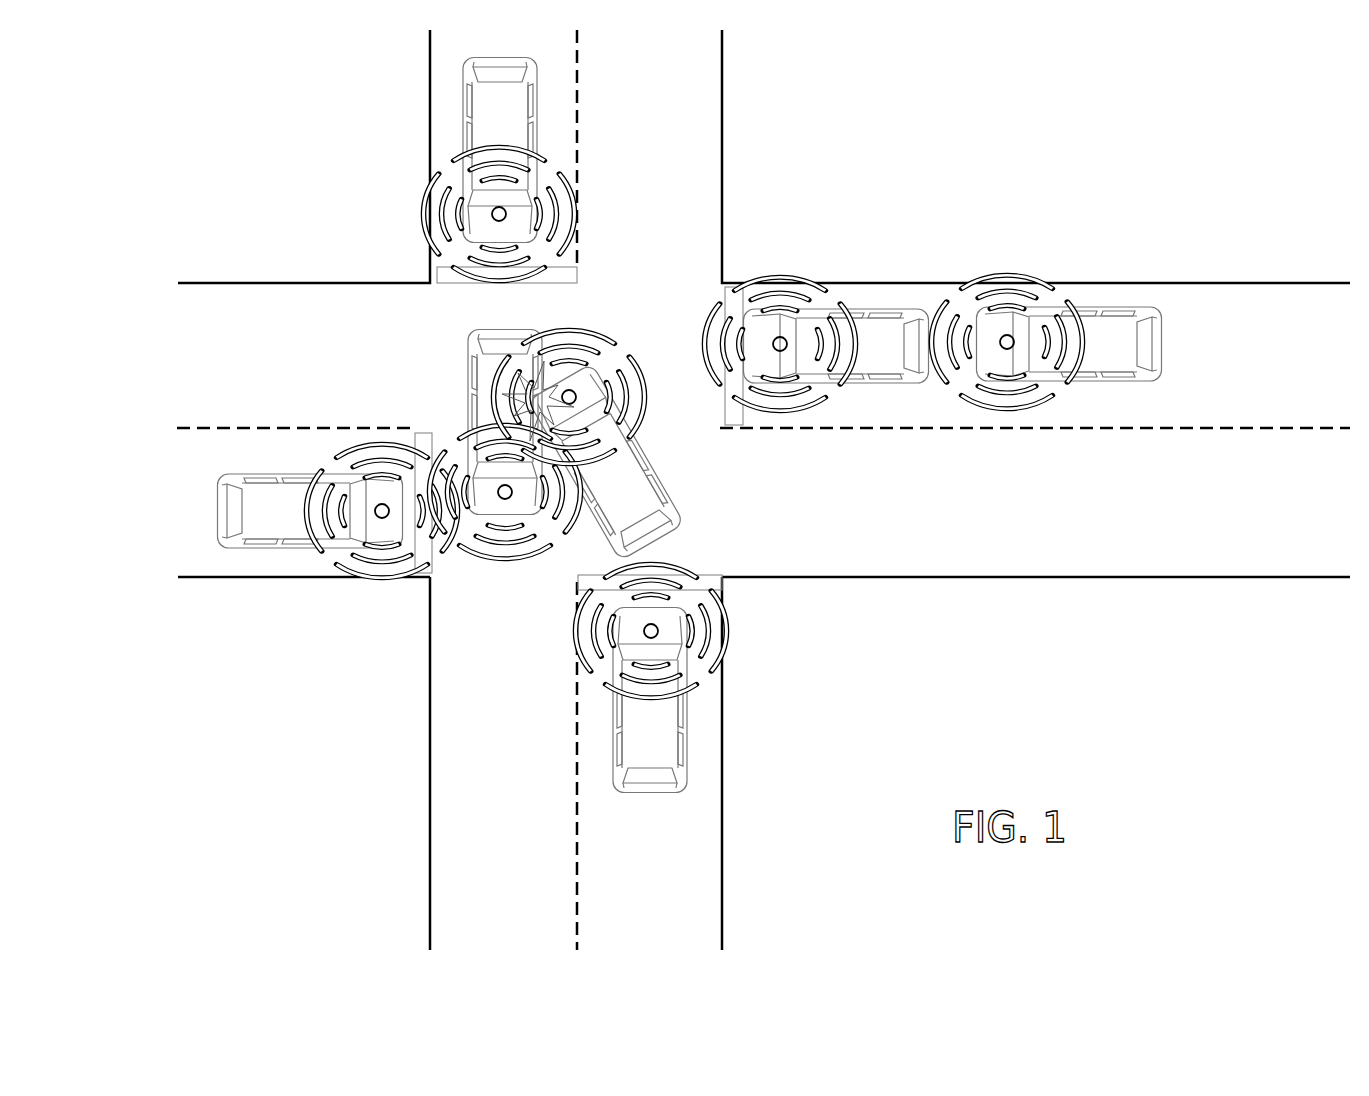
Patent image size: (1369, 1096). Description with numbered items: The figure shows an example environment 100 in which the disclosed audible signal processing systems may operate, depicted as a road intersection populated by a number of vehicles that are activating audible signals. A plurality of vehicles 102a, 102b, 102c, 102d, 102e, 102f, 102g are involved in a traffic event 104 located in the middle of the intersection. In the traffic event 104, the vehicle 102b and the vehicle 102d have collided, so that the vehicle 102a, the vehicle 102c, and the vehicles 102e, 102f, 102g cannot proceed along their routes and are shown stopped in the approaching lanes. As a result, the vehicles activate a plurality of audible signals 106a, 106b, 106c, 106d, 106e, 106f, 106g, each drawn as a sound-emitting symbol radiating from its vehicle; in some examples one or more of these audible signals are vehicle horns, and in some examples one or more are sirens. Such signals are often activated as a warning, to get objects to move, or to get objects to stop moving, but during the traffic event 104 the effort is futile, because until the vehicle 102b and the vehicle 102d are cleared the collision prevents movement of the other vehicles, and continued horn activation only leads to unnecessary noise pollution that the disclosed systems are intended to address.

The environment 100 is at (1125, 78).
The vehicle 102a is at (240, 470).
The vehicle 102b is at (475, 355).
The vehicle 102c is at (518, 123).
The vehicle 102d is at (665, 508).
The vehicle 102e is at (678, 783).
The vehicle 102f is at (883, 310).
The vehicle 102g is at (1152, 310).
The traffic event 104 is at (548, 380).
The audible signal 106a is at (381, 514).
The audible signal 106b is at (503, 488).
The audible signal 106c is at (500, 210).
The audible signal 106d is at (572, 396).
The audible signal 106e is at (657, 637).
The audible signal 106f is at (781, 340).
The audible signal 106g is at (1008, 340).